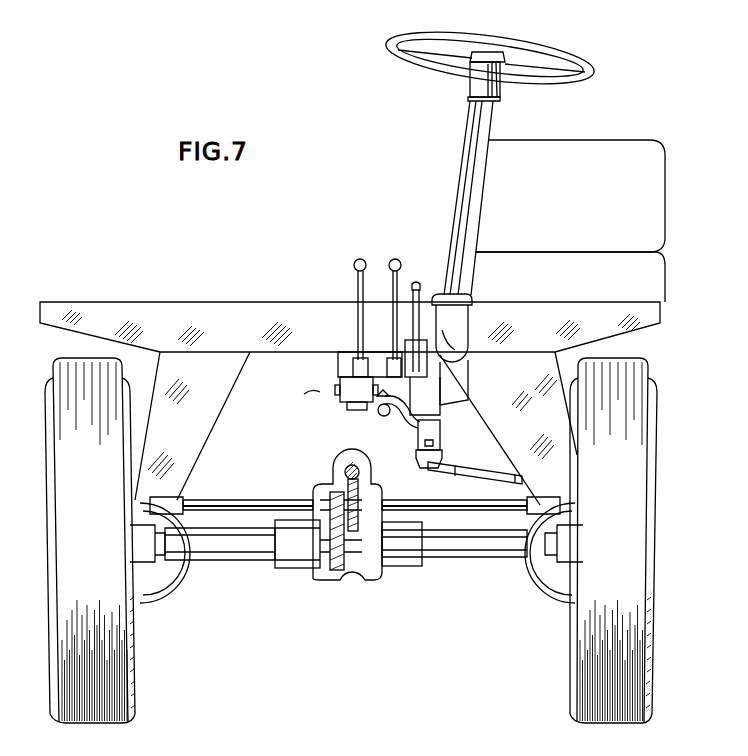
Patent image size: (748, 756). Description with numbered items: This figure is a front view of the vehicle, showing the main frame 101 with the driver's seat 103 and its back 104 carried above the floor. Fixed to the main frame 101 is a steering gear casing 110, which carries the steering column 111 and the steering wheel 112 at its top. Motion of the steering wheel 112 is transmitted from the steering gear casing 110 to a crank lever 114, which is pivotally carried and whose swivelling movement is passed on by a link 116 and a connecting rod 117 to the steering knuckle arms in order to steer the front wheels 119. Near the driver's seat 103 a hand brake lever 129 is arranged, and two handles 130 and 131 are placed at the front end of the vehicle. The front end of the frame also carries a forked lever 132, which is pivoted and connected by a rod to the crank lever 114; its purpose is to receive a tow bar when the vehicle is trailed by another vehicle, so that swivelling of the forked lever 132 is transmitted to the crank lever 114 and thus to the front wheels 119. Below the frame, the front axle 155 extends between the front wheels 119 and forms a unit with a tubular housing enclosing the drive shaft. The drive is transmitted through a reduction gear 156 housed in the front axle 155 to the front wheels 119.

The frame 101 is at (202, 306).
The seat 103 is at (598, 282).
The back 104 is at (618, 201).
The steering gear casing 110 is at (448, 350).
The steering column 111 is at (478, 120).
The steering wheel 112 is at (545, 52).
The crank lever 114 is at (436, 434).
The link 116 is at (462, 478).
The connecting rod 117 is at (250, 504).
The front wheels 119 is at (118, 655).
The hand brake lever 129 is at (417, 285).
The handle 130 is at (395, 259).
The handle 131 is at (355, 260).
The forked lever 132 is at (336, 388).
The front axle 155 is at (235, 545).
The reduction gear 156 is at (329, 473).